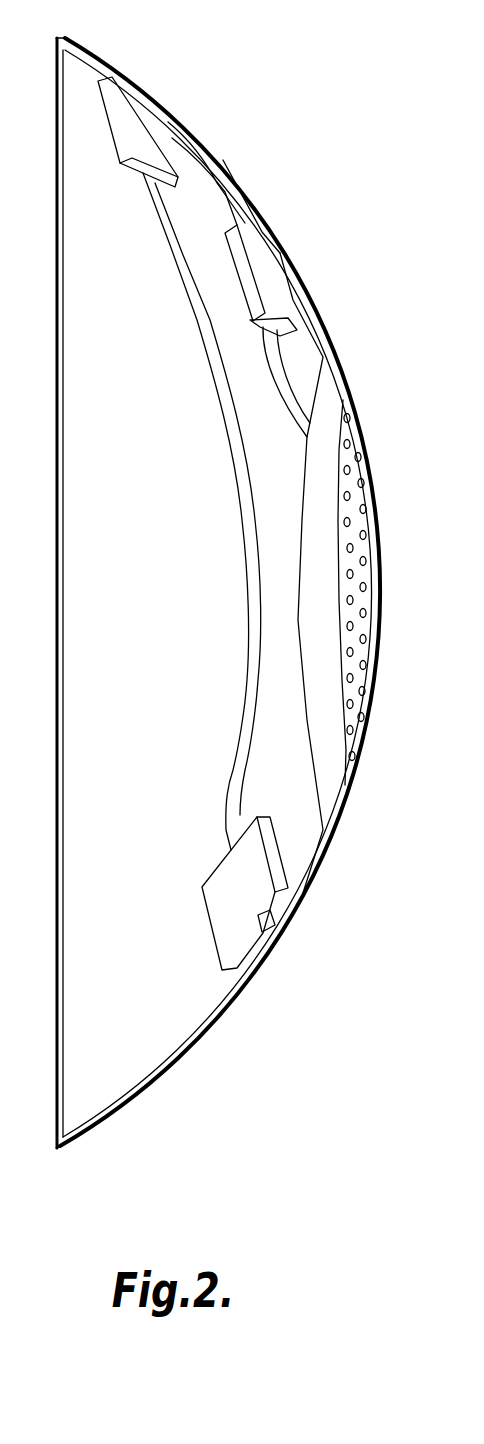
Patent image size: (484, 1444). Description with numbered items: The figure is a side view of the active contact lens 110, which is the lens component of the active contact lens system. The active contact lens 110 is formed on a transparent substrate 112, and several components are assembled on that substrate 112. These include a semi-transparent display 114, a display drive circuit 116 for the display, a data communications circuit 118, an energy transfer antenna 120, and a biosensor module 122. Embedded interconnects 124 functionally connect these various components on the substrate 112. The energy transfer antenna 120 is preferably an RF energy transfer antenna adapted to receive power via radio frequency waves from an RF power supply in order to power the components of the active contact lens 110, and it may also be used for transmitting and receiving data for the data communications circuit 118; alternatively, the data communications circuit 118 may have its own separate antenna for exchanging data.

The active contact lens 110 is at (343, 147).
The transparent substrate 112 is at (112, 1077).
The semi-transparent display 114 is at (371, 608).
The display drive circuit 116 is at (270, 280).
The data communications circuit 118 is at (147, 127).
The energy transfer antenna 120 is at (334, 418).
The biosensor module 122 is at (255, 877).
The embedded interconnects 124 is at (215, 185).